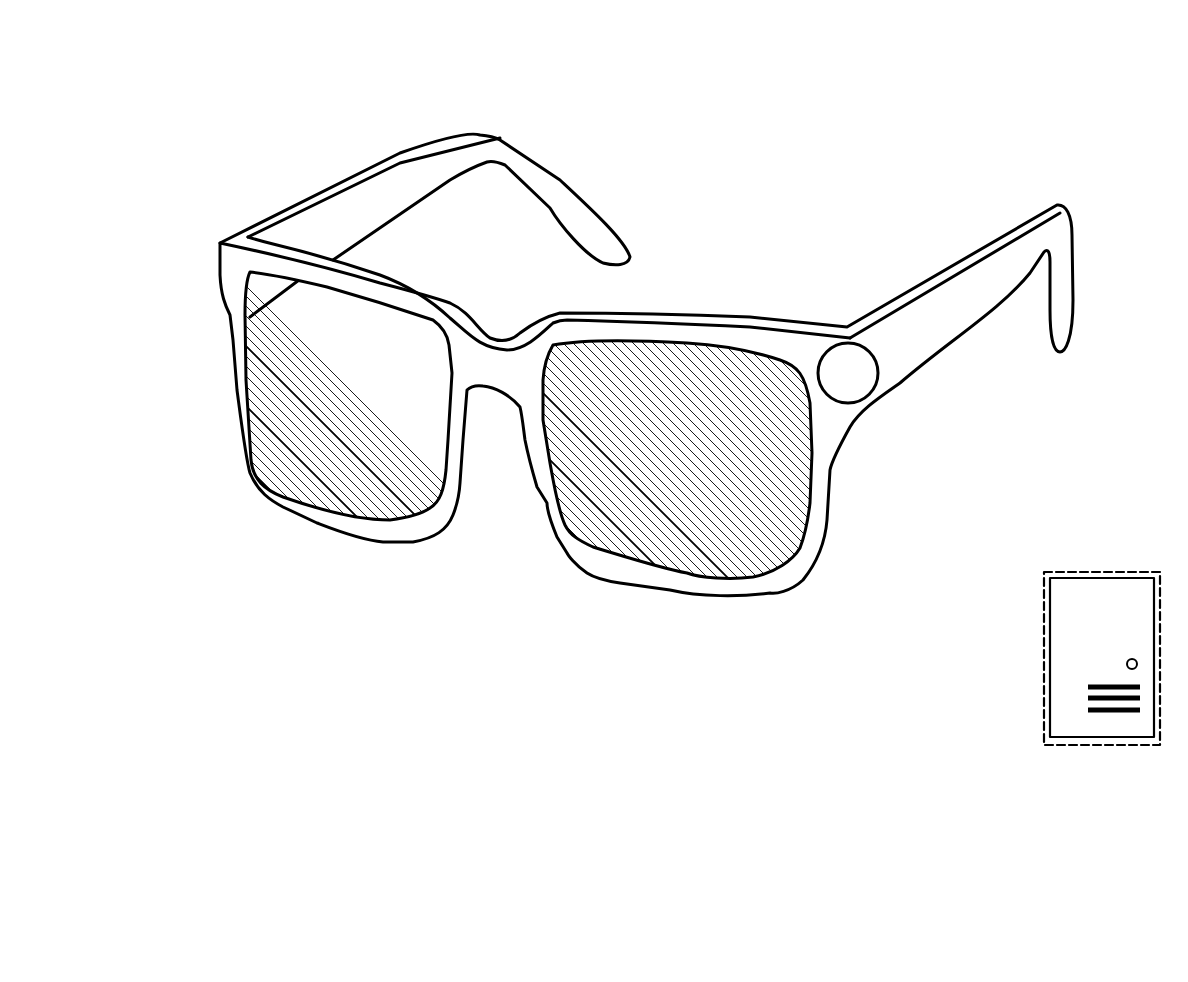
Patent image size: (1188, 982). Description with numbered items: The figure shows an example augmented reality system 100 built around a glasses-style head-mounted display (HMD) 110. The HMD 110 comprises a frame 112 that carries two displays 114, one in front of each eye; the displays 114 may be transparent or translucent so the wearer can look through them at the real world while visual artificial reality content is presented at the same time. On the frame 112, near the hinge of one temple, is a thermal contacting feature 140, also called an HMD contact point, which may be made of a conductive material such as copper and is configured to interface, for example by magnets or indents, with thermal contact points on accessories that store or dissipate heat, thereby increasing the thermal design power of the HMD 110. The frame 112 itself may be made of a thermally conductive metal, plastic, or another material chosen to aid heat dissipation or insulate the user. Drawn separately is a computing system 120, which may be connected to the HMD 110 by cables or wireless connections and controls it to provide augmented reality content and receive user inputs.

The augmented reality system 100 is at (760, 85).
The head-mounted display (HMD) 110 is at (220, 248).
The frame 112 is at (905, 296).
The display 114 is at (303, 472).
The computing system 120 is at (1043, 623).
The thermal contacting feature 140 is at (876, 389).